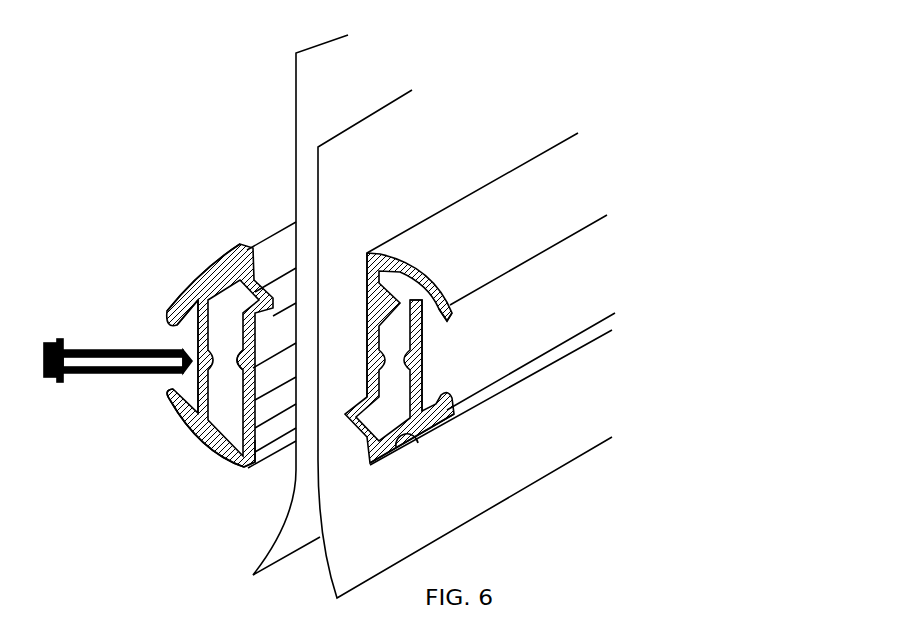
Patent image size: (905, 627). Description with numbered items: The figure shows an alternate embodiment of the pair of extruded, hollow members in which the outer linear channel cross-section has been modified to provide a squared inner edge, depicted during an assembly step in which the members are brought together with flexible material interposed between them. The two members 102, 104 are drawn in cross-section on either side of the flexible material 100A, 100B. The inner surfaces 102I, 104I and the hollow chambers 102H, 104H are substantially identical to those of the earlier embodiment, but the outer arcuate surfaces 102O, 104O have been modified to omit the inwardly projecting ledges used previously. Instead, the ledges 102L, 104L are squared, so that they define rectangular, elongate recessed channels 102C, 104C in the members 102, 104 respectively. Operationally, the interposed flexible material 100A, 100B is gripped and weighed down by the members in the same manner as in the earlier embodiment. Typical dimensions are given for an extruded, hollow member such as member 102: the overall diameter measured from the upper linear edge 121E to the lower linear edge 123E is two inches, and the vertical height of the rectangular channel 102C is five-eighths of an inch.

The flexible material 100A is at (296, 130).
The flexible material 100B is at (320, 192).
The member 102 is at (240, 248).
The outer arcuate surface 102O is at (180, 295).
The ledge 102L is at (183, 325).
The inner surface 102I is at (272, 334).
The recessed channel 102C is at (187, 383).
The hollow chamber 102H is at (240, 465).
The upper linear edge 121E is at (248, 247).
The lower linear edge 123E is at (243, 463).
The member 104 is at (526, 160).
The outer arcuate surface 104O is at (428, 250).
The ledge 104L is at (447, 313).
The inner surface 104I is at (365, 347).
The recessed channel 104C is at (425, 373).
The hollow chamber 104H is at (400, 445).